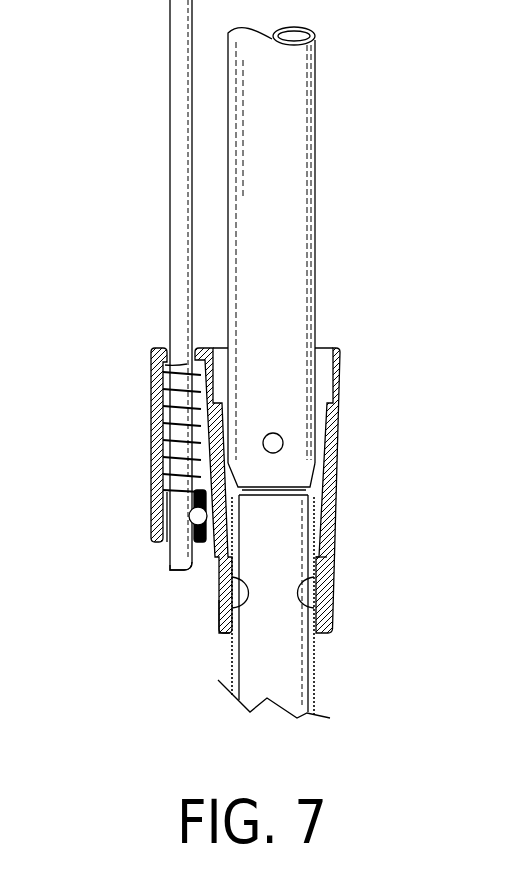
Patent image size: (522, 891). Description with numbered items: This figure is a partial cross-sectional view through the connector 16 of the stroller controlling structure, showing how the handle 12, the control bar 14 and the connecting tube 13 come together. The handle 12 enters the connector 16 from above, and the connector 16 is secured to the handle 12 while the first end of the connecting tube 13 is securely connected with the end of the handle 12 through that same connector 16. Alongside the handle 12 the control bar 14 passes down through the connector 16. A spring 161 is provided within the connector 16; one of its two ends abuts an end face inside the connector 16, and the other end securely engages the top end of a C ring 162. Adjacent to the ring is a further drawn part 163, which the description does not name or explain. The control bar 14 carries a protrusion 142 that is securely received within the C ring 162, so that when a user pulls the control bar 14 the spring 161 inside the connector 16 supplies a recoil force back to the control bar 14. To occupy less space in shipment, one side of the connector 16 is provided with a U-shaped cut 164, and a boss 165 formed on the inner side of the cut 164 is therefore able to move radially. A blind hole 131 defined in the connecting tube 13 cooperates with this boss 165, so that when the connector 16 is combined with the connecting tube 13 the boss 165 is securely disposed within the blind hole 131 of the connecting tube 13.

The handle 12 is at (296, 192).
The connecting tube 13 is at (317, 693).
The control bar 14 is at (169, 32).
The connector 16 is at (152, 378).
The blind hole 131 is at (312, 611).
The protrusion 142 is at (206, 516).
The spring 161 is at (183, 366).
The C ring 162 is at (199, 568).
The ball retainer 163 is at (208, 492).
The U shaped cut 164 is at (326, 556).
The boss 165 is at (222, 617).